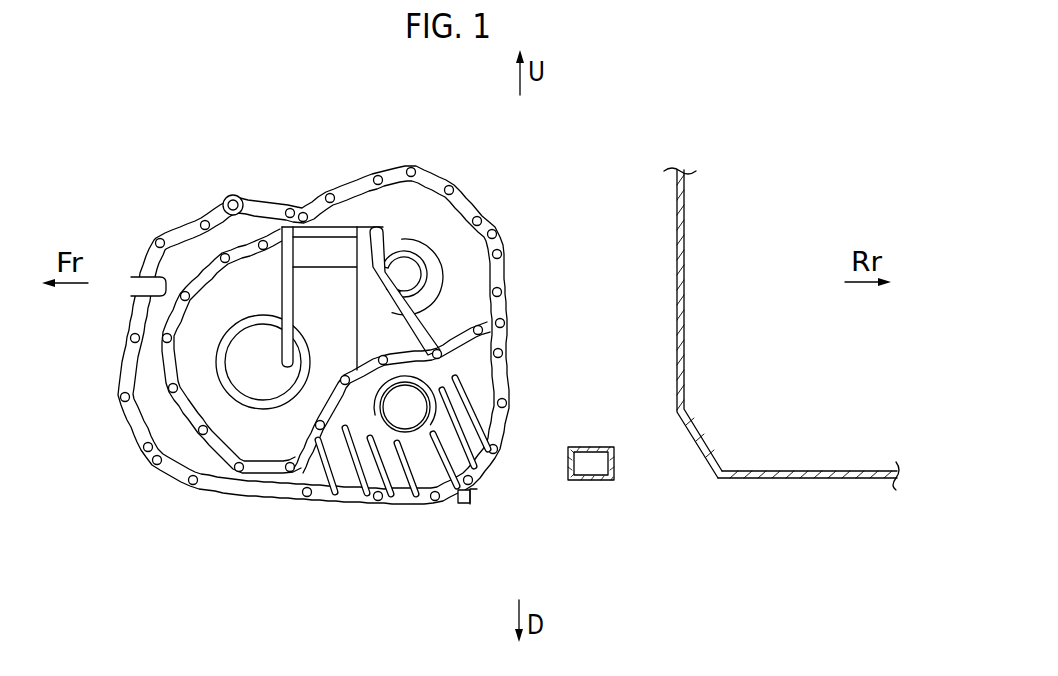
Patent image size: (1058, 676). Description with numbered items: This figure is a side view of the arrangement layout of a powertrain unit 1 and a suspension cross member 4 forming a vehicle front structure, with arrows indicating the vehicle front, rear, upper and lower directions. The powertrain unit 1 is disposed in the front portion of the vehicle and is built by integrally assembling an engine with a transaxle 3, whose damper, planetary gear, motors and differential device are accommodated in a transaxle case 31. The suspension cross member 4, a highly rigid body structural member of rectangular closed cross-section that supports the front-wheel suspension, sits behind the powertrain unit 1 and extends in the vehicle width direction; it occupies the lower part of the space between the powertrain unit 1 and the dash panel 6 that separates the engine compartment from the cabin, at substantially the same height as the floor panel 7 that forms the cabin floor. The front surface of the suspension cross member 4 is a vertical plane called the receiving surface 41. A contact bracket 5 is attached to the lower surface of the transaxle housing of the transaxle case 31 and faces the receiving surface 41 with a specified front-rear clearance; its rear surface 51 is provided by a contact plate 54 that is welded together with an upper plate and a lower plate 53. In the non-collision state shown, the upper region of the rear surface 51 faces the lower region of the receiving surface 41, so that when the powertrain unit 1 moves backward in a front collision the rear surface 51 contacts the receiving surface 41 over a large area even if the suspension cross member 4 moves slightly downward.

The powertrain unit 1 is at (181, 224).
The transaxle 3 is at (315, 282).
The transaxle case 31 is at (419, 221).
The suspension cross member 4 is at (609, 467).
The receiving surface 41 is at (568, 462).
The contact bracket 5 is at (427, 512).
The rear surface 51 is at (474, 494).
The lower plate 53 is at (455, 505).
The contact plate 54 is at (509, 529).
The dash panel 6 is at (678, 263).
The floor panel 7 is at (821, 471).